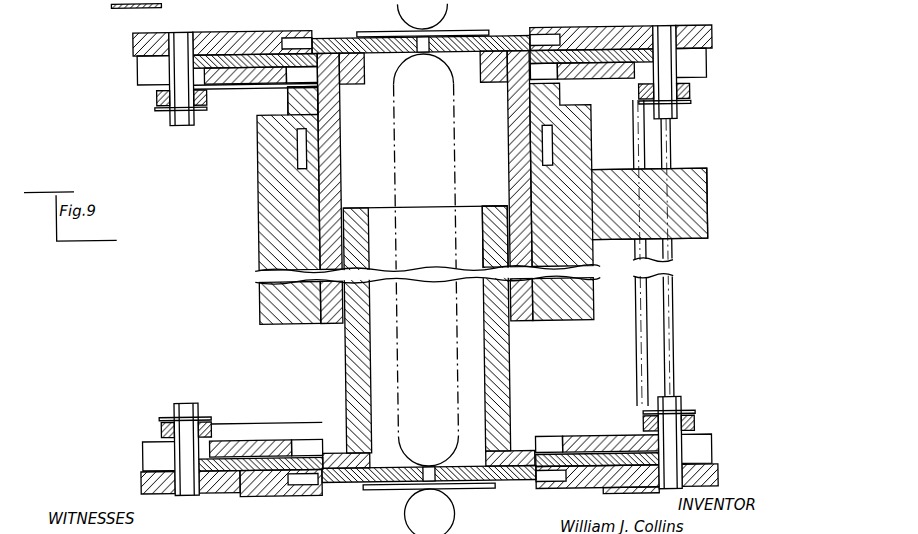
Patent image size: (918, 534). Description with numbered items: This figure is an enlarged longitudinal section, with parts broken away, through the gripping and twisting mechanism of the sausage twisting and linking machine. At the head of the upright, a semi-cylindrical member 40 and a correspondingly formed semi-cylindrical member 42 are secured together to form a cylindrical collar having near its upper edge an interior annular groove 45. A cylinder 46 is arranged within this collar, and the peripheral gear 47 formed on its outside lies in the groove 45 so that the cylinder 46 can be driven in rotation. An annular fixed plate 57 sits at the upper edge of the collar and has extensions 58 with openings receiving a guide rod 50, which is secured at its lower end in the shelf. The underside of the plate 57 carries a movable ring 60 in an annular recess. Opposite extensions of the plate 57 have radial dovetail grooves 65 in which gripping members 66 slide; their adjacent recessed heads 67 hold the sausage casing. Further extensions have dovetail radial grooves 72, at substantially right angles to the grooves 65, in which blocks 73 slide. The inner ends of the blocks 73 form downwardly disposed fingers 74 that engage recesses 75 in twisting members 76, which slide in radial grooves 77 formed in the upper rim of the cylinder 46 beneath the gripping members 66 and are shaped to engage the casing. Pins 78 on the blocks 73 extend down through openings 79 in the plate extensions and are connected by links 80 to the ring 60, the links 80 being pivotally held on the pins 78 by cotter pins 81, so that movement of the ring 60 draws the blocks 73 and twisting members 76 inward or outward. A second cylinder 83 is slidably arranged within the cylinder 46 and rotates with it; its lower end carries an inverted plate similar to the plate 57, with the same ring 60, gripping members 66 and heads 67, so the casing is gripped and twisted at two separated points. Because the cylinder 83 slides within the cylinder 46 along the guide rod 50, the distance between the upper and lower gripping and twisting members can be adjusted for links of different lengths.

The semi-cylindrical member 40 is at (580, 150).
The semi-cylindrical member 42 is at (268, 205).
The interior annular groove 45 is at (288, 148).
The cylinder 46 is at (340, 175).
The peripheral gear 47 is at (300, 168).
The guide rod 50 is at (655, 304).
The annular fixed plate 57 is at (297, 38).
The plate extension 58 is at (690, 214).
The movable ring 60 is at (600, 80).
The radial dovetail groove 65 is at (548, 38).
The gripping member 66 is at (210, 30).
The recessed head 67 is at (440, 33).
The dovetail radial groove 72 is at (234, 22).
The block 73 is at (245, 37).
The finger 74 is at (310, 40).
The recess 75 is at (350, 58).
The twisting member 76 is at (386, 55).
The radial groove 77 is at (350, 60).
The pin 78 is at (180, 60).
The opening 79 is at (150, 68).
The link 80 is at (222, 95).
The cotter pin 81 is at (158, 106).
The cylinder 83 is at (490, 222).